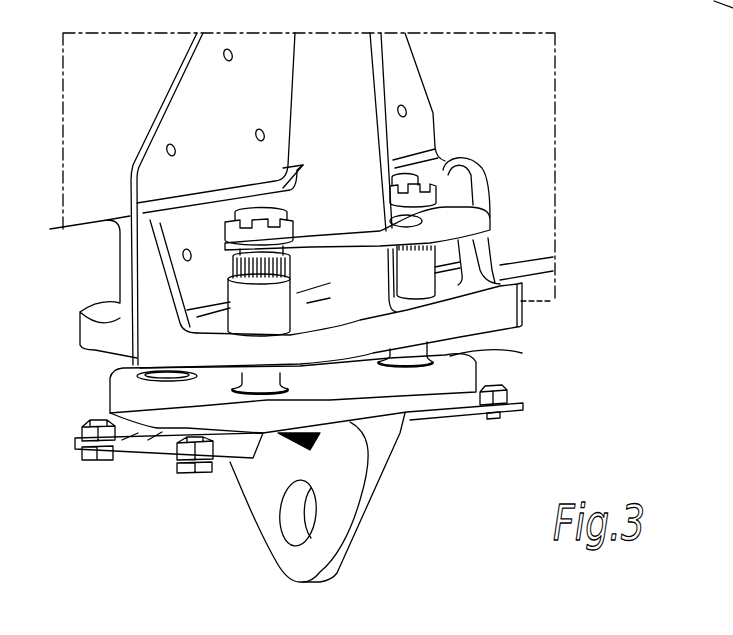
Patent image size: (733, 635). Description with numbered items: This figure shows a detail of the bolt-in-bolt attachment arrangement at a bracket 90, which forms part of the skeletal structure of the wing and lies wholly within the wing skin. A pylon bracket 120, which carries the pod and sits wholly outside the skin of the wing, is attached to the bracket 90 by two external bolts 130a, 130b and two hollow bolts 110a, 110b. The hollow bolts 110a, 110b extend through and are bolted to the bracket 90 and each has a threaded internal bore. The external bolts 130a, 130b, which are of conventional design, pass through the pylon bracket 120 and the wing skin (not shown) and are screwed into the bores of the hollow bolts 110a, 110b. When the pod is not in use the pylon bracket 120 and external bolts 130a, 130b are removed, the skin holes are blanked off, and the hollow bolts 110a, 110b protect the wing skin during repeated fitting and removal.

The bracket 90 is at (188, 88).
The hollow bolt 110a is at (445, 259).
The hollow bolt 110b is at (222, 278).
The external bolt 130a is at (437, 355).
The external bolt 130b is at (227, 385).
The pylon bracket 120 is at (368, 510).